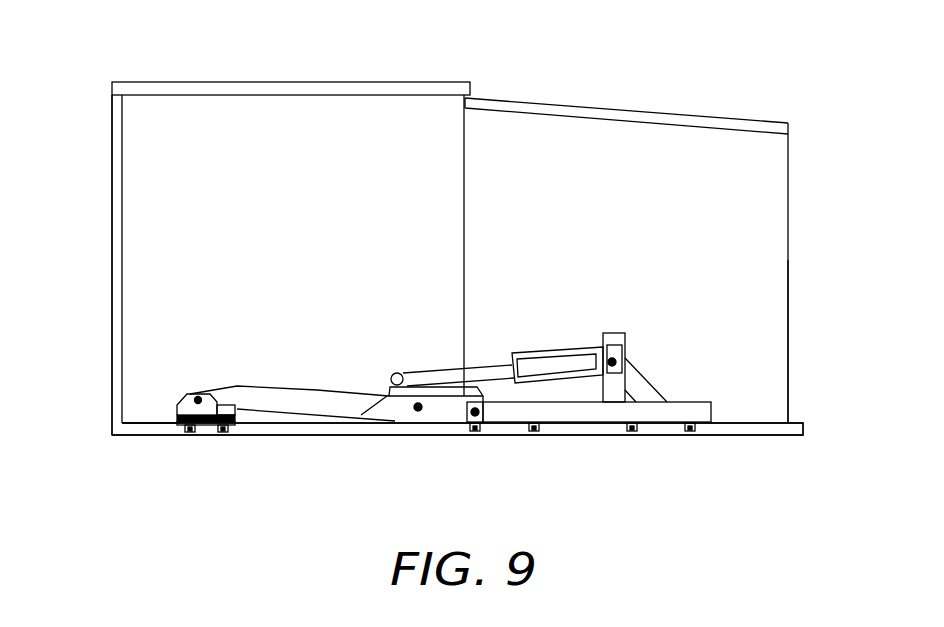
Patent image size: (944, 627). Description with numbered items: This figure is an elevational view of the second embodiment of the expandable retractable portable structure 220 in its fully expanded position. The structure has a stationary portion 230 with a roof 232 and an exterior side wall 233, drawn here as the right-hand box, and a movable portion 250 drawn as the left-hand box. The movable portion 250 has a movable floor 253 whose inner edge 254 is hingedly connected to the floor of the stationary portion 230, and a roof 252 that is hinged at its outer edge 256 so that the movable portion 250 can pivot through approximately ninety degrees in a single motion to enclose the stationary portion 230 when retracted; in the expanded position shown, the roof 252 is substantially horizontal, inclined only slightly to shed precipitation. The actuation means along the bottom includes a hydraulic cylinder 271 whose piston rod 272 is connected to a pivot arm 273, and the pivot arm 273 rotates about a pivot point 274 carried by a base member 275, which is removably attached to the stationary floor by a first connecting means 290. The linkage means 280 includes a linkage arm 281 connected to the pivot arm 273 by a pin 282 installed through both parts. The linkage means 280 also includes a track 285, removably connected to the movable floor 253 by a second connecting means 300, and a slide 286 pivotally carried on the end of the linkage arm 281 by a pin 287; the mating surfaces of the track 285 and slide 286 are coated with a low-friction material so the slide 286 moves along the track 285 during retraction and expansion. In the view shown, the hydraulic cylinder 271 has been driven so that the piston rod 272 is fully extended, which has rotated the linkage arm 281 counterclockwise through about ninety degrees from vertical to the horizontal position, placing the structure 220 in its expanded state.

The expandable retractable portable structure 220 is at (622, 110).
The stationary portion 230 is at (788, 123).
The roof 232 is at (675, 115).
The exterior side wall 233 is at (788, 260).
The movable portion 250 is at (322, 82).
The roof of movable portion 252 is at (222, 82).
The movable floor 253 is at (143, 422).
The inner edge 254 is at (457, 427).
The outer edge 256 is at (112, 82).
The hydraulic cylinder 271 is at (568, 350).
The piston rod 272 is at (485, 365).
The pivot arm 273 is at (442, 394).
The pivot point 274 is at (482, 423).
The base member 275 is at (645, 412).
The linkage means 280 is at (310, 391).
The linkage arm 281 is at (327, 402).
The pin 282 is at (418, 411).
The track 285 is at (235, 425).
The slide 286 is at (215, 396).
The pin 287 is at (198, 398).
The first connecting means 290 is at (632, 430).
The second connecting means 300 is at (220, 432).